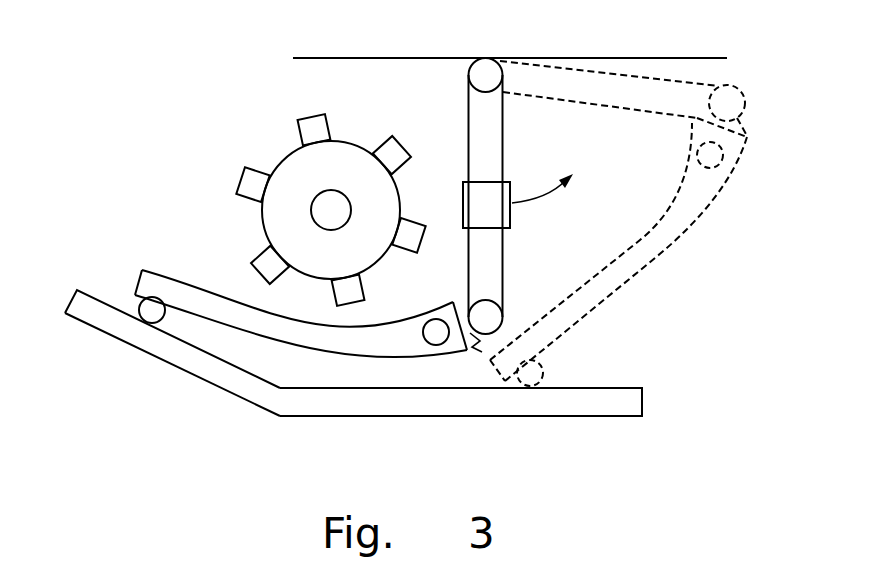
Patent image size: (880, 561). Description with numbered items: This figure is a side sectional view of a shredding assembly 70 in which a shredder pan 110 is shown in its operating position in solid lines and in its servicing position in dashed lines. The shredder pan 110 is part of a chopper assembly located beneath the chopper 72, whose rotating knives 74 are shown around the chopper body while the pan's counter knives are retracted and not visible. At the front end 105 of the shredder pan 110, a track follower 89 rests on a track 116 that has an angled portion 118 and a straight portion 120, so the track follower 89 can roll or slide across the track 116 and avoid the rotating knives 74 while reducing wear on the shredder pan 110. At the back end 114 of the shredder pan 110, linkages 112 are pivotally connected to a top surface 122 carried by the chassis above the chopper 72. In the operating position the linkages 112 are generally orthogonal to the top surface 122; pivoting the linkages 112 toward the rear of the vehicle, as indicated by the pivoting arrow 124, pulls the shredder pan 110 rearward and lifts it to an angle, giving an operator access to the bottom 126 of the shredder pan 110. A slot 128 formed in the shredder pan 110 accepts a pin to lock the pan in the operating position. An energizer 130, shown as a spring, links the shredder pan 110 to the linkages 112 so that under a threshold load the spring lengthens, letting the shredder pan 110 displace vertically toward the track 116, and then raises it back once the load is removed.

The sheet feeding assembly 70 is at (196, 172).
The chopper 72 is at (276, 142).
The rotating knives 74 is at (413, 228).
The track follower 89 is at (138, 308).
The front end 105 is at (133, 277).
The shredder pan 110 is at (197, 293).
The linkages 112 is at (472, 120).
The back end 114 is at (460, 300).
The track 116 is at (287, 403).
The angled portion 118 is at (178, 358).
The straight portion 120 is at (383, 405).
The top surface 122 is at (457, 57).
The pivoting arrow 124 is at (540, 200).
The bottom 126 is at (260, 325).
The slot 128 is at (437, 336).
The energizer 130 is at (478, 340).